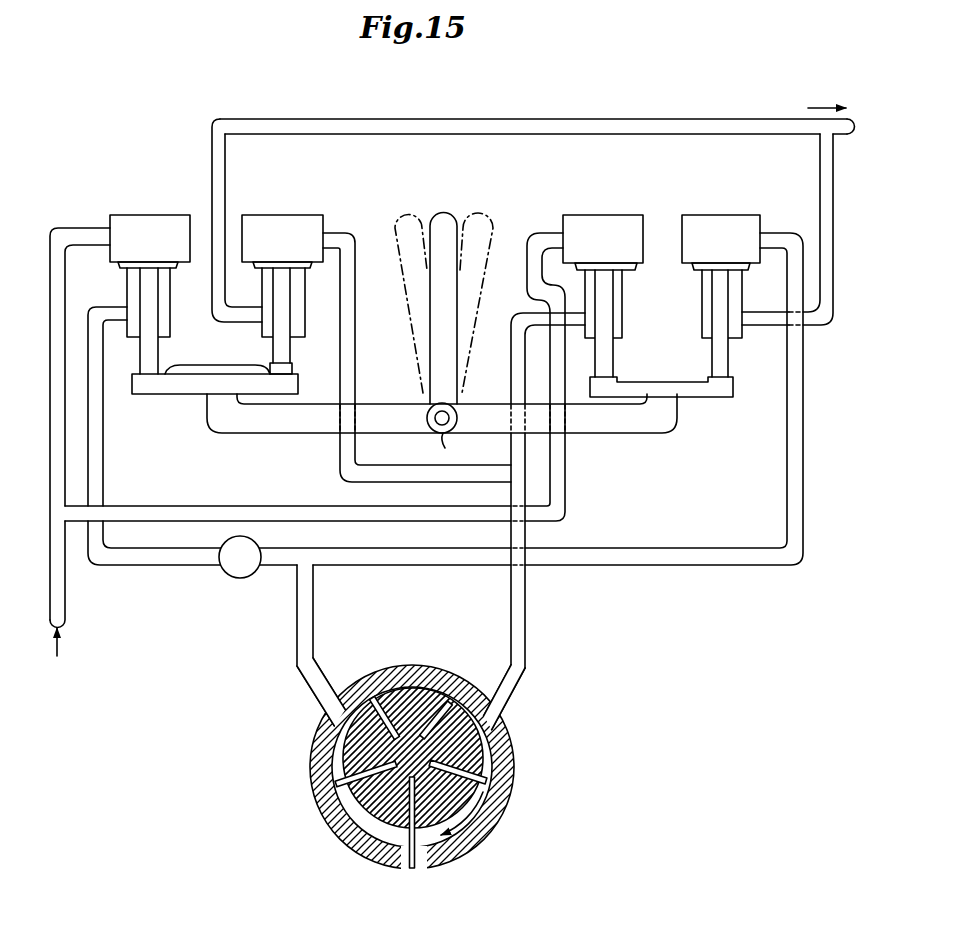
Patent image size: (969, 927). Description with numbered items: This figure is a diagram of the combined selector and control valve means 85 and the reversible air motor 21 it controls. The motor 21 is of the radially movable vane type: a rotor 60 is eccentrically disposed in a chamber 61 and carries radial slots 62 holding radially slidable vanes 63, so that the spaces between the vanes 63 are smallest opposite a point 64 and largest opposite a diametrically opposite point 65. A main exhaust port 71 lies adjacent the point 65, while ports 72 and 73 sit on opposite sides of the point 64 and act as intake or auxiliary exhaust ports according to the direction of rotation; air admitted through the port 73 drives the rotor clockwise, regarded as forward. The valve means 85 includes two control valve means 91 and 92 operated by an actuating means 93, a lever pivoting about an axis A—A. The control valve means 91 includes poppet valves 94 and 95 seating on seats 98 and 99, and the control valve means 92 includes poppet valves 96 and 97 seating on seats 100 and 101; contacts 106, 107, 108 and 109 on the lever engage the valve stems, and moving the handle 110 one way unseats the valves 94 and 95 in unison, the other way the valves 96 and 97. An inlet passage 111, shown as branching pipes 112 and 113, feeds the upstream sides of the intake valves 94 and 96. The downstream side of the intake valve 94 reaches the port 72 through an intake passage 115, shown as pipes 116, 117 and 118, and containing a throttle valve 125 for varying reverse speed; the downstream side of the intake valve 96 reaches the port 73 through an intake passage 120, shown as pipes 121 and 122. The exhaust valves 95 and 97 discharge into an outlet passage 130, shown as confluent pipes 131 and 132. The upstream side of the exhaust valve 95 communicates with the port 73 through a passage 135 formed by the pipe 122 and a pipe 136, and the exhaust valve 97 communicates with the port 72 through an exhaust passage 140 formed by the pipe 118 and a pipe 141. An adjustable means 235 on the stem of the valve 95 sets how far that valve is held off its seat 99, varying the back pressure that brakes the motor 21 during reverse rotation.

The air motor 21 is at (408, 762).
The rotor 60 is at (497, 758).
The chamber 61 is at (479, 803).
The radial slots 62 is at (462, 705).
The vanes 63 is at (437, 698).
The point of minimum volume 64 is at (409, 688).
The point of maximum volume 65 is at (410, 869).
The main exhaust port 71 is at (433, 867).
The port 72 is at (328, 714).
The port 73 is at (492, 716).
The combined selector and control valve means 85 is at (533, 198).
The control valve means 91 is at (211, 271).
The control valve means 92 is at (672, 272).
The actuating means 93 is at (390, 406).
The poppet valve 94 is at (139, 294).
The poppet valve 95 is at (282, 294).
The poppet valve 96 is at (618, 296).
The poppet valve 97 is at (732, 296).
The seat 98 is at (126, 270).
The seat 99 is at (309, 270).
The seat 100 is at (639, 268).
The seat 101 is at (748, 269).
The contact 106 is at (166, 373).
The contact 107 is at (274, 365).
The contact 108 is at (616, 377).
The contact 109 is at (734, 377).
The handle 110 is at (441, 213).
The inlet passage 111 is at (67, 612).
The pipe 112 is at (87, 228).
The pipe 113 is at (191, 506).
The intake passage 115 is at (171, 566).
The pipe 116 is at (104, 481).
The pipe 117 is at (283, 567).
The pipe 118 is at (297, 639).
The intake passage 120 is at (529, 536).
The pipe 121 is at (513, 383).
The pipe 122 is at (527, 637).
The throttle valve 125 is at (236, 579).
The outlet passage 130 is at (539, 119).
The pipe 131 is at (594, 134).
The pipe 132 is at (820, 151).
The passage 135 is at (338, 468).
The pipe 136 is at (340, 445).
The exhaust passage 140 is at (668, 568).
The pipe 141 is at (745, 567).
The adjustable means 235 is at (295, 373).